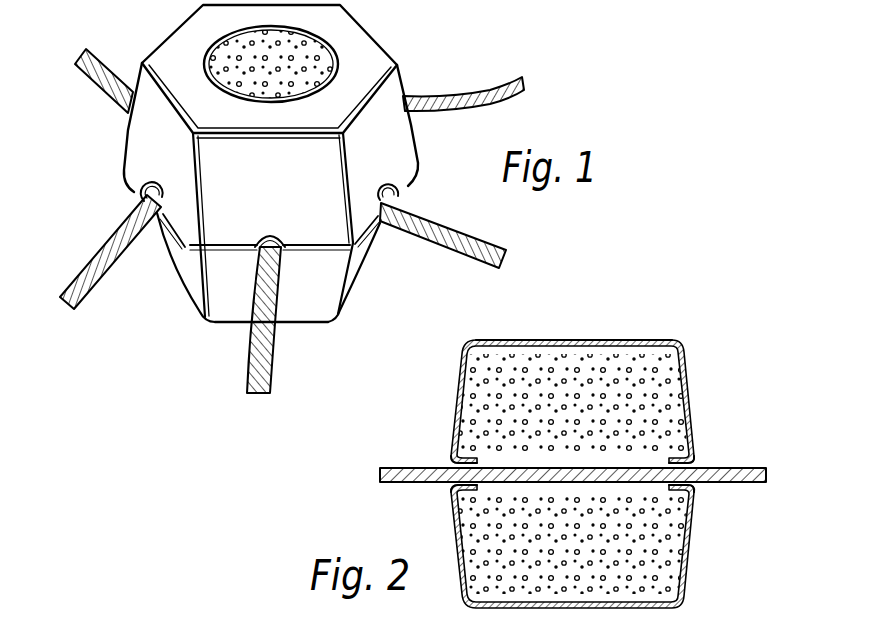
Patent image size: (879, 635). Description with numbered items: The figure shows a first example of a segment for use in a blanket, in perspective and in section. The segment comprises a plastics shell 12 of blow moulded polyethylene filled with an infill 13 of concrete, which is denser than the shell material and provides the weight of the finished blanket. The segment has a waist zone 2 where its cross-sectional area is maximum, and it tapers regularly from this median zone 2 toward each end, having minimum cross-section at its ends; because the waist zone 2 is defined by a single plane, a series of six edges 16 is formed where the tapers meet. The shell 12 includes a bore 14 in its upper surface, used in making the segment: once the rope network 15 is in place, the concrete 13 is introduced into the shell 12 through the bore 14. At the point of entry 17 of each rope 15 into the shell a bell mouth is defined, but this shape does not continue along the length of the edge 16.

In FIG. 1, the waist zone 2 is at (184, 251).
In FIG. 2, the waist zone 2 is at (449, 487).
In FIG. 1, the plastics shell 12 is at (378, 70).
In FIG. 2, the plastics shell 12 is at (467, 375).
In FIG. 1, the infill 13 is at (228, 65).
In FIG. 2, the infill 13 is at (633, 408).
In FIG. 1, the bore 14 is at (320, 38).
In FIG. 2, the bore 14 is at (621, 341).
In FIG. 1, the rope network 15 is at (110, 262).
In FIG. 2, the rope network 15 is at (386, 468).
In FIG. 1, the edges 16 is at (126, 172).
In FIG. 1, the point of entry 17 is at (152, 186).
In FIG. 2, the point of entry 17 is at (452, 463).